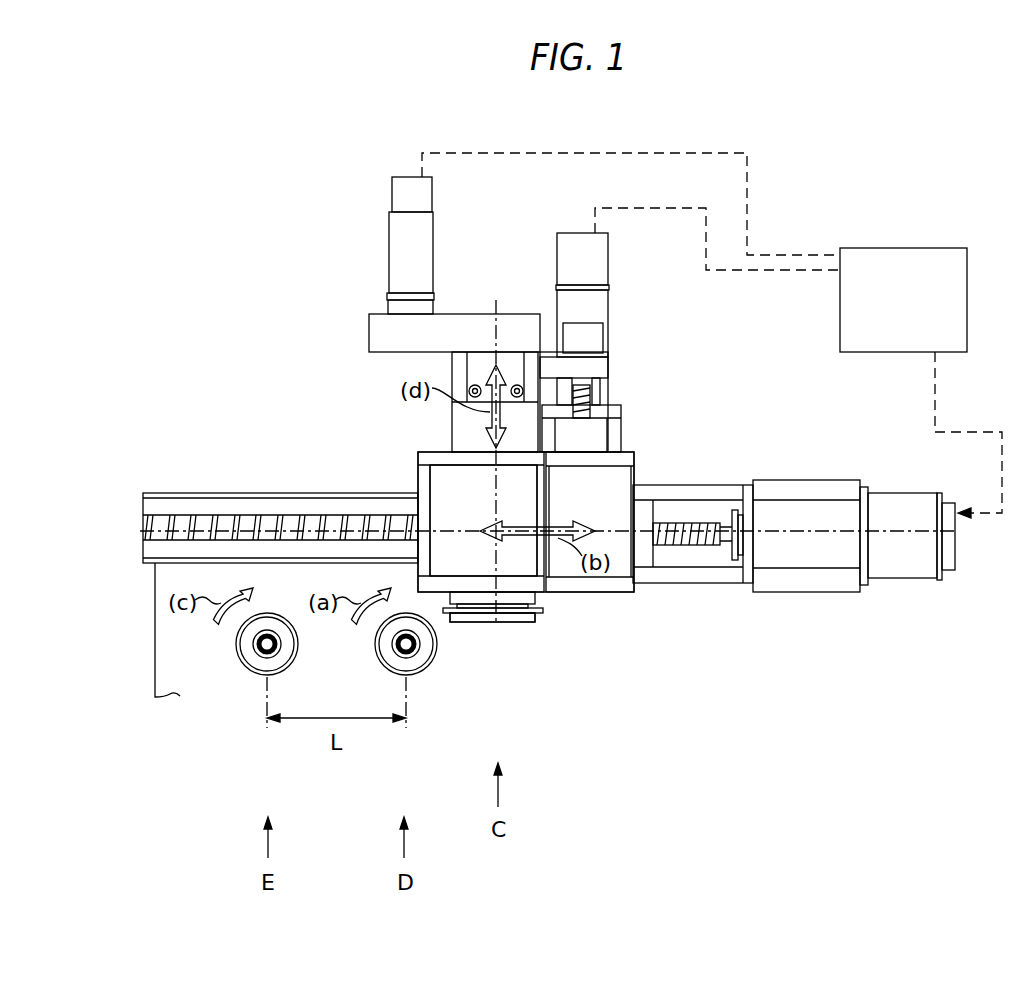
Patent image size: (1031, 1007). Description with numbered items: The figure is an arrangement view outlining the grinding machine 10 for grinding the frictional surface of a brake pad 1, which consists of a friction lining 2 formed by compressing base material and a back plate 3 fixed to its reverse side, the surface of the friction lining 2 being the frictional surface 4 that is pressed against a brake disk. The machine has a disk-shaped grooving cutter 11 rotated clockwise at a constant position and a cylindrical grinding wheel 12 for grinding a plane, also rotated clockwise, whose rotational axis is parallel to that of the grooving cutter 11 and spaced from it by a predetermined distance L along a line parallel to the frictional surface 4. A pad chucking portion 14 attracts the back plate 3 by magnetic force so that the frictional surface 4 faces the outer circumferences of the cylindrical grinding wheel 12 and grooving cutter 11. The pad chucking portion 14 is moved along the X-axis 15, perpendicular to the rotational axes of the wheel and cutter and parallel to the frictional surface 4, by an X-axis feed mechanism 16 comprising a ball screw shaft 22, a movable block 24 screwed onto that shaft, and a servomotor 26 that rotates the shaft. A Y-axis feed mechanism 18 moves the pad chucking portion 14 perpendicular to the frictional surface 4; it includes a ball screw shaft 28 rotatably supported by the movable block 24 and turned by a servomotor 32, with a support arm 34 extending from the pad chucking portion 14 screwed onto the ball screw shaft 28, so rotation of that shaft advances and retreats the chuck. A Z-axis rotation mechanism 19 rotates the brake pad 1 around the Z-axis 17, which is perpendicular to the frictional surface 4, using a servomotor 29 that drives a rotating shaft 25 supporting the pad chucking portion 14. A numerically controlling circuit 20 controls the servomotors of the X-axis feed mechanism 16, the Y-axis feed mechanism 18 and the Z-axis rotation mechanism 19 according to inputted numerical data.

The brake pad 1 is at (537, 634).
The friction lining 2 is at (538, 621).
The back plate 3 is at (543, 611).
The frictional surface 4 is at (527, 623).
The grinding machine 10 is at (644, 442).
The grooving cutter 11 is at (420, 663).
The cylindrical grinding wheel 12 is at (287, 653).
The pad chucking portion 14 is at (480, 607).
The X-axis 15 is at (458, 528).
The X-axis feed mechanism 16 is at (790, 600).
The Z-axis 17 is at (493, 483).
The Y-axis feed mechanism 18 is at (592, 304).
The Z-axis rotation mechanism 19 is at (445, 606).
The numerically controlling circuit 20 is at (913, 248).
The ball screw shaft 22 is at (708, 522).
The movable block 24 is at (622, 572).
The rotating shaft 25 is at (473, 583).
The servomotor 26 is at (917, 562).
The ball screw shaft 28 is at (590, 392).
The servomotor 29 is at (398, 248).
The servomotor 32 is at (570, 248).
The support arm 34 is at (588, 363).